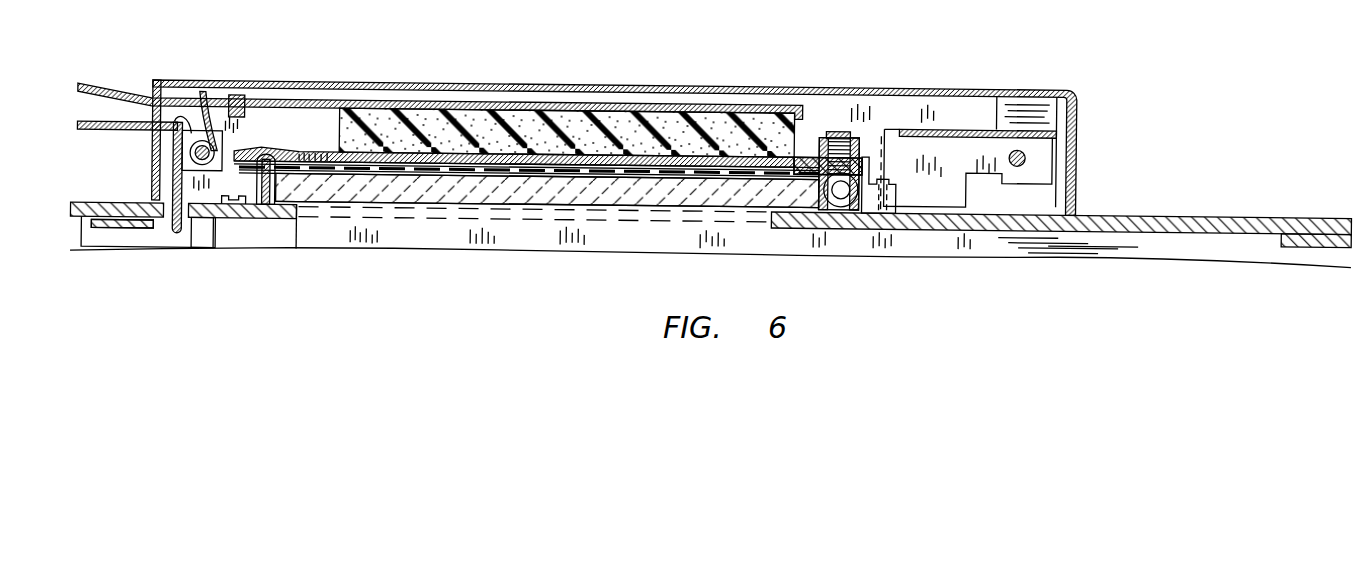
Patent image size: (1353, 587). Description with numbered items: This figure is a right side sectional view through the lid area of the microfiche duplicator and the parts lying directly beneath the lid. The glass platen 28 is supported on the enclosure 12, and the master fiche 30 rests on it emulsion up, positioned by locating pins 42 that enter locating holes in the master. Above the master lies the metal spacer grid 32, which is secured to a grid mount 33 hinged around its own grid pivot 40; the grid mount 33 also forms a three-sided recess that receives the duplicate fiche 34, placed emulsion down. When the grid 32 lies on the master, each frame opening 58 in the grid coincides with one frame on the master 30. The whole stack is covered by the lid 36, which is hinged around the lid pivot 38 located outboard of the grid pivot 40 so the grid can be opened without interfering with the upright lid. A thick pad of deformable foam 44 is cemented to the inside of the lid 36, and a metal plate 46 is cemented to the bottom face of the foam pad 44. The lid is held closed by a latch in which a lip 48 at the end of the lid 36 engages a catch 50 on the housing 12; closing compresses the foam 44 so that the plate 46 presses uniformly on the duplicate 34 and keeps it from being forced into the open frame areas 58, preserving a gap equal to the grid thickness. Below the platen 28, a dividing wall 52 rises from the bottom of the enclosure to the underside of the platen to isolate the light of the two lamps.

The enclosure 12 is at (1212, 206).
The platen 28 is at (502, 184).
The master fiche 30 is at (453, 173).
The spacer grid 32 is at (542, 172).
The grid mount 33 is at (795, 161).
The duplicate fiche 34 is at (722, 164).
The lid 36 is at (480, 78).
The lid pivot 38 is at (1026, 148).
The grid pivot 40 is at (857, 202).
The locating pins 42 is at (267, 152).
The foam pad 44 is at (603, 110).
The metal plate 46 is at (653, 151).
The lip 48 is at (178, 233).
The catch 50 is at (197, 208).
The dividing wall 52 is at (400, 229).
The frame openings 58 is at (675, 170).